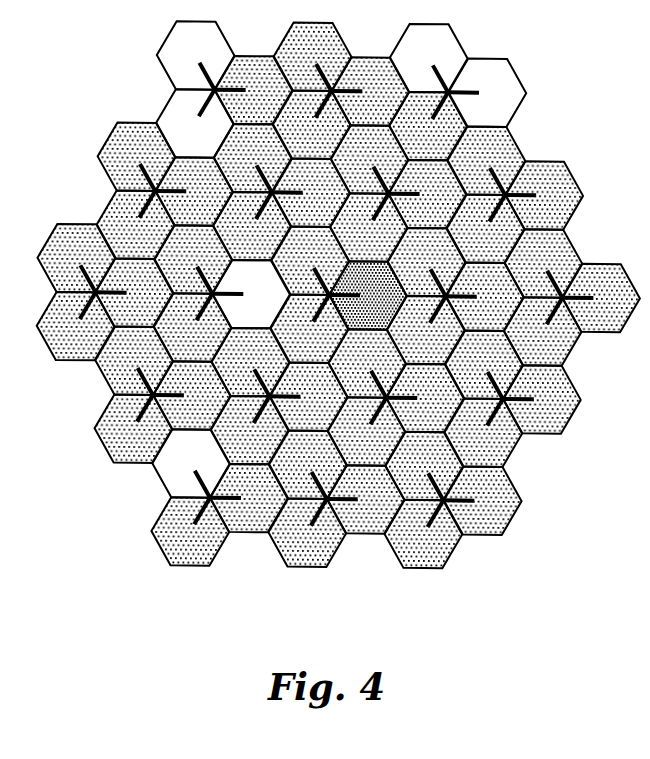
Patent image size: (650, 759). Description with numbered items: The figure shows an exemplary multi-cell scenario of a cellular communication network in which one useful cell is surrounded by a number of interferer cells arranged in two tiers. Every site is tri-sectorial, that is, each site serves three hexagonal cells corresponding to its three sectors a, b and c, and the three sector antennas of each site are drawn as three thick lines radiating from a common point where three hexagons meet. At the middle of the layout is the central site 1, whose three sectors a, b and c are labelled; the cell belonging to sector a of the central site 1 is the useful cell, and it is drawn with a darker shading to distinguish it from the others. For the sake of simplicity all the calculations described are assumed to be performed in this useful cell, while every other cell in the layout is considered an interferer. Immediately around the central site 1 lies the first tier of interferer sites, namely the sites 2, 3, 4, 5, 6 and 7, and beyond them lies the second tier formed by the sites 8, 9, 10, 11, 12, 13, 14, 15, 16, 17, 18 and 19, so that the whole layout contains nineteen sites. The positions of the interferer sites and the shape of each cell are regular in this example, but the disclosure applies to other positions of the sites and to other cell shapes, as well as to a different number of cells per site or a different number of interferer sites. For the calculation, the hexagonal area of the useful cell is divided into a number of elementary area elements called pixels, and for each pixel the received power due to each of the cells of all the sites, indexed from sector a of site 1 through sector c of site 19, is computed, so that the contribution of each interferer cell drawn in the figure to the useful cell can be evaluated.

The central site 1 is at (336, 305).
The interferer site 2 is at (457, 298).
The interferer site 3 is at (400, 196).
The interferer site 4 is at (283, 194).
The interferer site 5 is at (223, 296).
The interferer site 6 is at (281, 398).
The interferer site 7 is at (397, 400).
The interferer site 8 is at (574, 300).
The interferer site 9 is at (516, 197).
The interferer site 10 is at (466, 94).
The interferer site 11 is at (349, 93).
The interferer site 12 is at (233, 92).
The interferer site 13 is at (173, 193).
The interferer site 14 is at (114, 294).
The interferer site 15 is at (171, 397).
The interferer site 16 is at (228, 500).
The interferer site 17 is at (345, 501).
The interferer site 18 is at (462, 502).
The interferer site 19 is at (521, 401).
The sector a is at (368, 295).
The sector b is at (310, 260).
The sector c is at (309, 328).